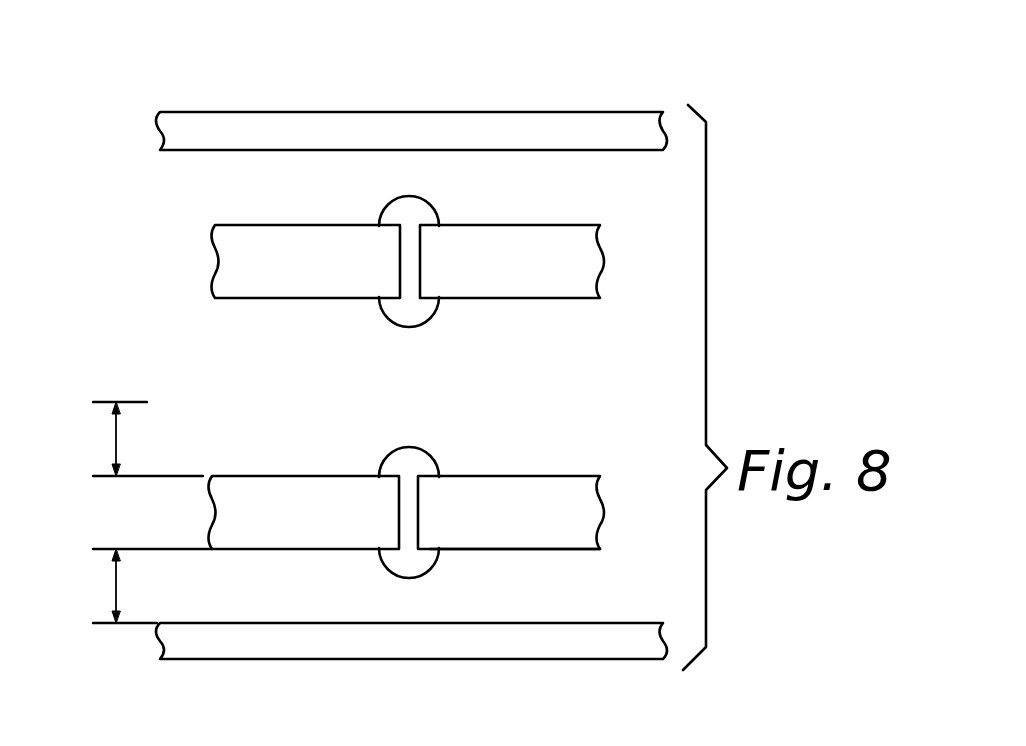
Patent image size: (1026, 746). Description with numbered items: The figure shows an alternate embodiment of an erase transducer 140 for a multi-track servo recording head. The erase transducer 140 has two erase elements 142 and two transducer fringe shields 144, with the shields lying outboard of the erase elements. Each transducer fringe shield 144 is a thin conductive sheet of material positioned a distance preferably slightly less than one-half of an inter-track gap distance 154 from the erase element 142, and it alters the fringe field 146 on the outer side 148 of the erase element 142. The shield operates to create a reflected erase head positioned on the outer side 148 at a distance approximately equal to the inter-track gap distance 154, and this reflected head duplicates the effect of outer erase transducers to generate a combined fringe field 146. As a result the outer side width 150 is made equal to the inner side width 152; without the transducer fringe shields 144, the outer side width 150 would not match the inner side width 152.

The erase transducer 140 is at (228, 90).
The erase element 142 is at (232, 261).
The transducer fringe shield 144 is at (170, 128).
The fringe field 146 is at (382, 566).
The outer side 148 is at (557, 552).
The outer side width 150 is at (115, 580).
The inner side width 152 is at (115, 436).
The inter-track gap distance 154 is at (596, 242).